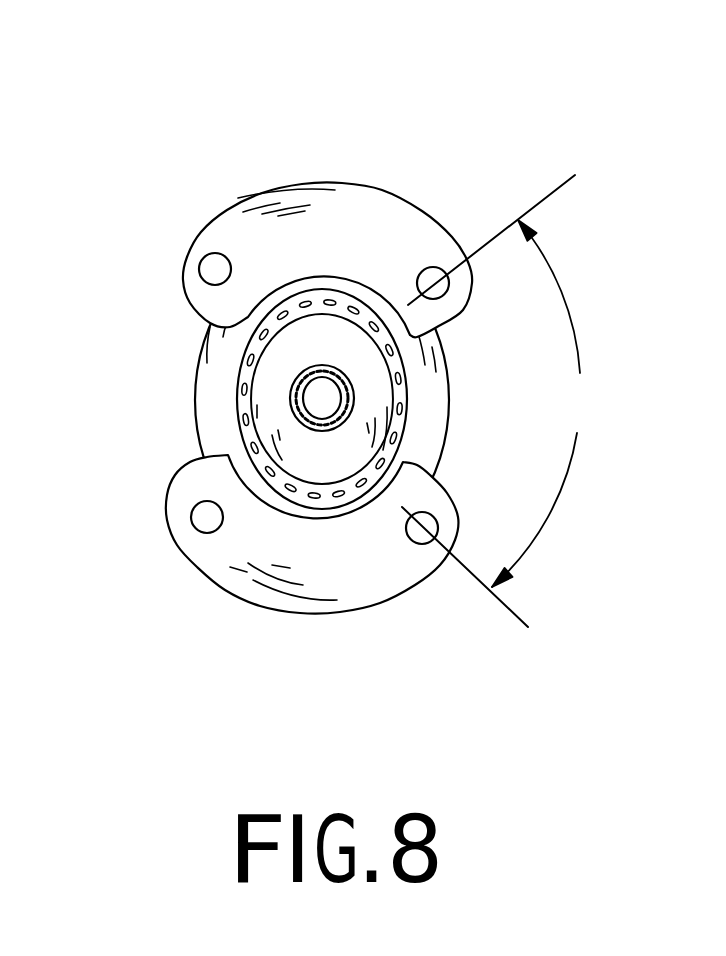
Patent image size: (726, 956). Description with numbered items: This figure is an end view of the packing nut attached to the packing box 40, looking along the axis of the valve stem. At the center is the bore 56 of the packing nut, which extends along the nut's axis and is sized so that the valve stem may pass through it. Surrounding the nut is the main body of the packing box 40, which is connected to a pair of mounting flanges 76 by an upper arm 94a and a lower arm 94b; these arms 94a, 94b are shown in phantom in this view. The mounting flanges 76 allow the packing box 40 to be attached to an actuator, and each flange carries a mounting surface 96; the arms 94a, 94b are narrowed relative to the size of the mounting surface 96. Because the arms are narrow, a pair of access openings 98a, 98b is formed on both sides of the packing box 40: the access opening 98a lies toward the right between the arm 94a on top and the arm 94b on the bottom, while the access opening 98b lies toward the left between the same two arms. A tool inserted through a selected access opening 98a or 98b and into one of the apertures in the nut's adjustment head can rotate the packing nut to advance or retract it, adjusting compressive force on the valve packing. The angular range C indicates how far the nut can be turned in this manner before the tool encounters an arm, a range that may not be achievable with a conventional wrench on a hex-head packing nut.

The packing box 40 is at (203, 343).
The bore 56 is at (291, 411).
The mounting flanges 76 is at (337, 225).
The arm 94a is at (298, 185).
The arm 94b is at (385, 604).
The mounting surface 96 is at (398, 265).
The access opening 98a is at (425, 398).
The access opening 98b is at (215, 412).
The angular range C is at (540, 403).